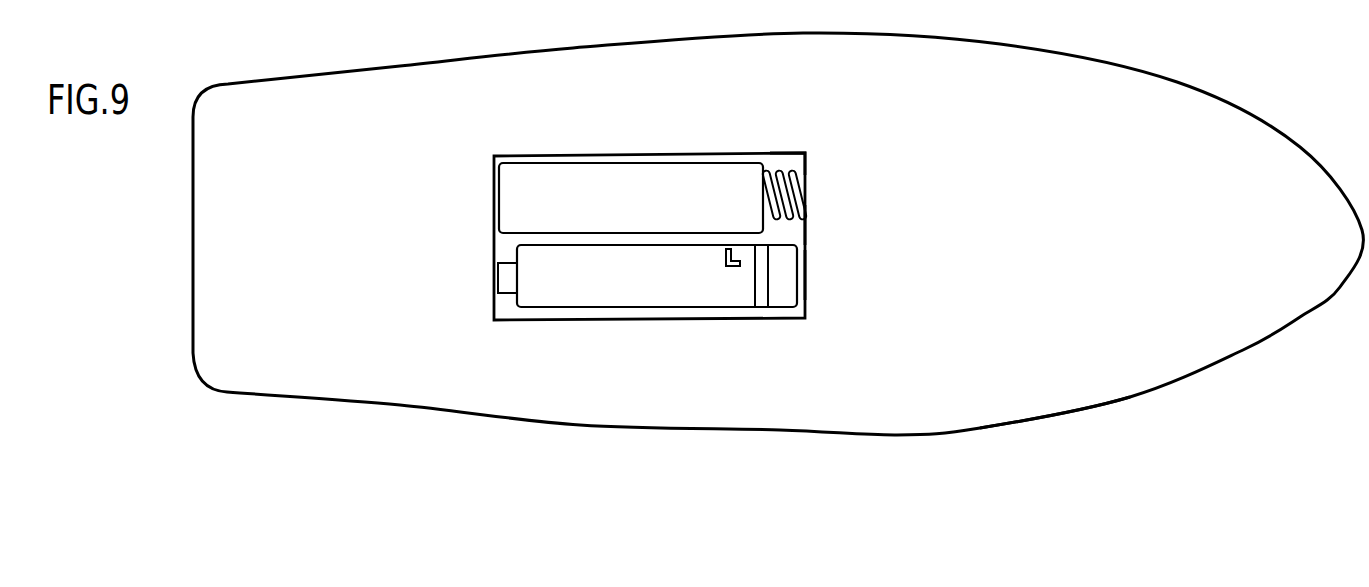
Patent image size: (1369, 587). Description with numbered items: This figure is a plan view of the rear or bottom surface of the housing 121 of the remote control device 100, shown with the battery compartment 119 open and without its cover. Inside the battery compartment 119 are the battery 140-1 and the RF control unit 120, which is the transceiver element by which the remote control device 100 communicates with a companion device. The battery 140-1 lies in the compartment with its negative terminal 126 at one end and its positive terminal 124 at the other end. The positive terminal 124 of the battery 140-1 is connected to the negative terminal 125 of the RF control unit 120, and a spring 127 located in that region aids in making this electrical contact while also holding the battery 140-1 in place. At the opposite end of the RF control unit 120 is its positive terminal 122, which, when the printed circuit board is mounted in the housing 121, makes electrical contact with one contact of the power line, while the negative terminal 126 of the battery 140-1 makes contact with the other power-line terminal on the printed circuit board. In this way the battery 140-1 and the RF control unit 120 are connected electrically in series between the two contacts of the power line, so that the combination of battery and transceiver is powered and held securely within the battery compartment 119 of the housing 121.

The remote control device 100 is at (1180, 74).
The housing 121 is at (1042, 420).
The battery 140-1 is at (649, 207).
The negative terminal of battery 126 is at (492, 202).
The RF control unit 120 is at (660, 292).
The positive terminal of the RF control unit 122 is at (498, 281).
The battery compartment 119 is at (796, 153).
The positive terminal of battery 124 is at (792, 191).
The spring 127 is at (803, 228).
The negative terminal of the unit 125 is at (807, 273).